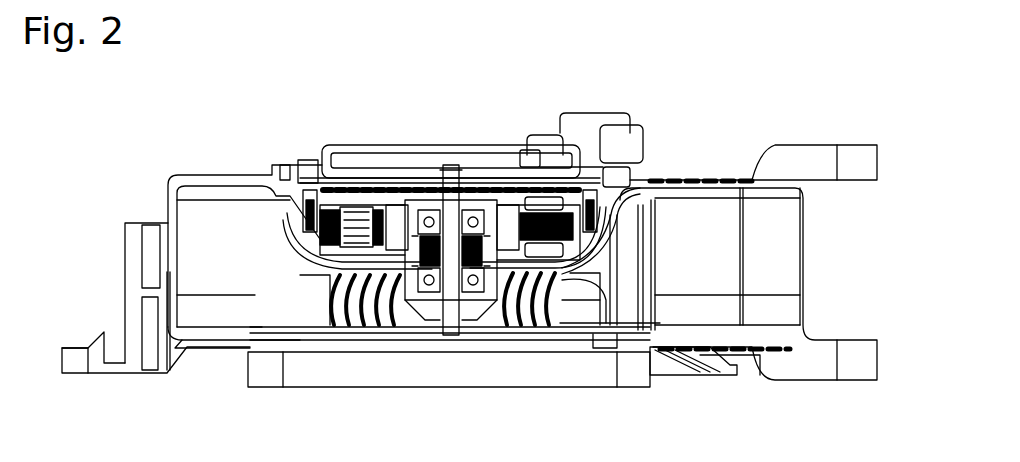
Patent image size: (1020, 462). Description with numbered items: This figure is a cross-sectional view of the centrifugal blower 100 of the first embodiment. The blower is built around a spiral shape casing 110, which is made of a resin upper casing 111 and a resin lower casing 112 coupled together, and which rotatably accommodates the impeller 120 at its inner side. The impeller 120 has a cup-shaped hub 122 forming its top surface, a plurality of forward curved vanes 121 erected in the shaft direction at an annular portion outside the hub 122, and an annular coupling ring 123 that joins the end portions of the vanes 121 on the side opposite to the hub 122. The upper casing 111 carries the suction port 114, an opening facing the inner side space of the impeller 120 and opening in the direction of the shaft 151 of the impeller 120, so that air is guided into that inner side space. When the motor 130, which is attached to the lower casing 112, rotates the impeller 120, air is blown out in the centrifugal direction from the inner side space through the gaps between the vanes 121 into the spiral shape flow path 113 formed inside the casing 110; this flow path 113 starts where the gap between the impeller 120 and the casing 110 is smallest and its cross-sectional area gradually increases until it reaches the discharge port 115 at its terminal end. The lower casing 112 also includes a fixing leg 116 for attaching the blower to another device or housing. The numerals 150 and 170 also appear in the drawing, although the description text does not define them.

The centrifugal blower 100 is at (690, 128).
The casing 110 is at (60, 230).
The upper casing 111 is at (187, 312).
The lower casing 112 is at (188, 267).
The flow path 113 is at (218, 213).
The suction port 114 is at (404, 383).
The discharge port 115 is at (850, 253).
The fixing leg 116 is at (77, 367).
The impeller 120 is at (587, 266).
The vanes 121 is at (567, 293).
The hub 122 is at (600, 250).
The coupling ring 123 is at (638, 345).
The motor 130 is at (490, 227).
The rotor 150 is at (410, 203).
The shaft 151 is at (452, 325).
The cover 170 is at (367, 146).